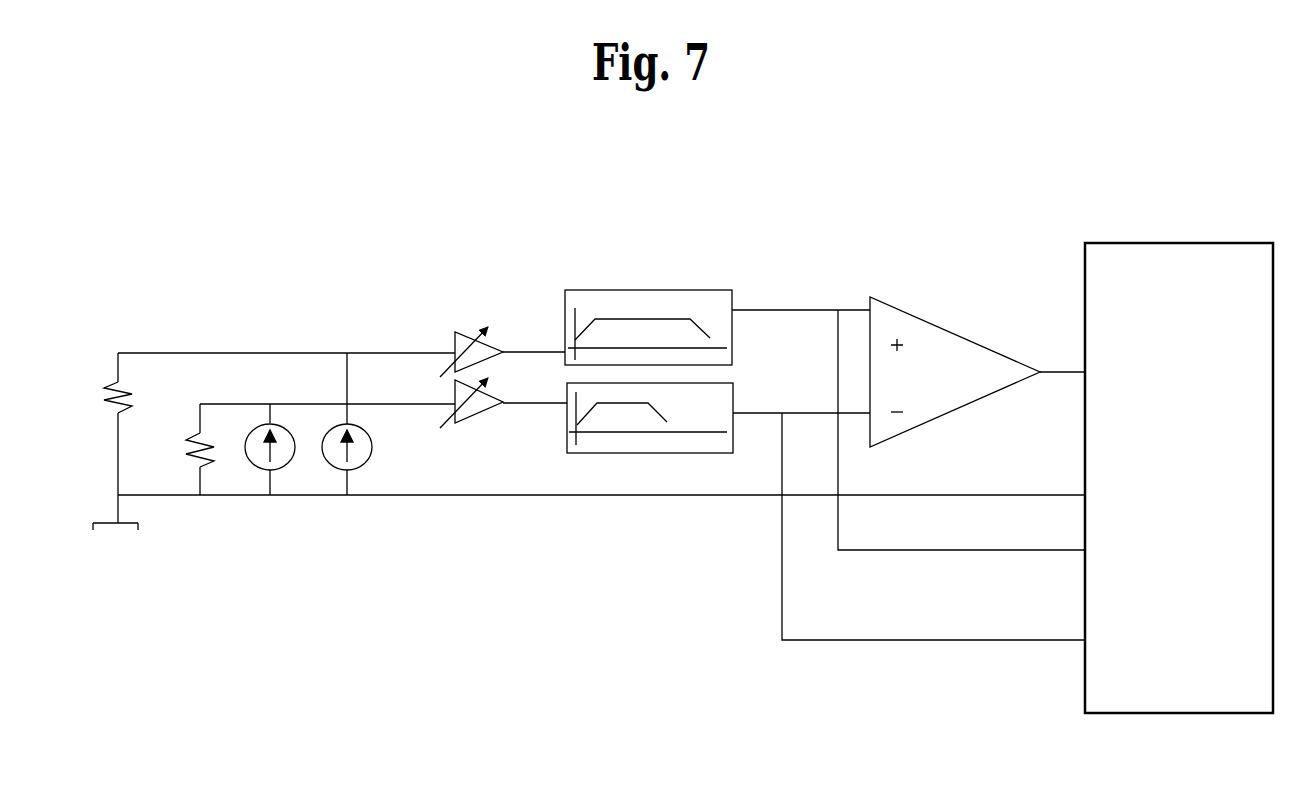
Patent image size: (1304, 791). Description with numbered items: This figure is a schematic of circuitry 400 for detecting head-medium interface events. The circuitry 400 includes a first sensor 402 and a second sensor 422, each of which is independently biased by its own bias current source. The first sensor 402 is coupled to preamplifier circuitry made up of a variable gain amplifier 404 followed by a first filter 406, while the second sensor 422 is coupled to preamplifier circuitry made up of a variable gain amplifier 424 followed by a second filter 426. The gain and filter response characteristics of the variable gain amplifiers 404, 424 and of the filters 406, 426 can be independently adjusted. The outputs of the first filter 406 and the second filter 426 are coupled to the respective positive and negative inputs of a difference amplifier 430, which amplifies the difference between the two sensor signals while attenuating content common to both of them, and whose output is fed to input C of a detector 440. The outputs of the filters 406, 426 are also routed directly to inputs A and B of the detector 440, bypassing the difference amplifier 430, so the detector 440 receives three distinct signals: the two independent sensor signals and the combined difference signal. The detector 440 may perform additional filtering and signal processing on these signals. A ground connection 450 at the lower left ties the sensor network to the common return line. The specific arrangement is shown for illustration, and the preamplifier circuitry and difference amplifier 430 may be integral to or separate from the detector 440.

The circuitry 400 is at (348, 264).
The first sensor 402 is at (272, 423).
The second sensor 422 is at (371, 450).
The variable gain amplifier 424 is at (462, 332).
The variable gain amplifier 404 is at (492, 410).
The second filter 426 is at (625, 290).
The first filter 406 is at (733, 393).
The difference amplifier 430 is at (928, 320).
The detector 440 is at (1187, 243).
The ground connection 450 is at (118, 528).